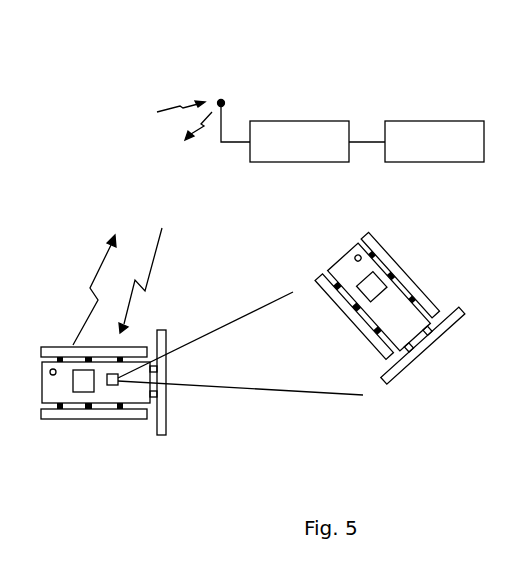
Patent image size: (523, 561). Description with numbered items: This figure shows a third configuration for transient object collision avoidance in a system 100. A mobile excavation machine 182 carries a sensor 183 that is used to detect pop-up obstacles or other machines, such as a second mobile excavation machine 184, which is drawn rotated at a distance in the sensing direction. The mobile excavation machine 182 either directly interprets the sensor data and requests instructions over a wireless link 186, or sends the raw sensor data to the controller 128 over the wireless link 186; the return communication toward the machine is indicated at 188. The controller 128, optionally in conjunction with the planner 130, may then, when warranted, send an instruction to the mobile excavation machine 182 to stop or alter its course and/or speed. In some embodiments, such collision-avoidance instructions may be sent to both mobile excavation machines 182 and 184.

The robotic system 100 is at (300, 32).
The controller 128 is at (297, 117).
The planner 130 is at (425, 117).
The mobile excavation machine 182 is at (75, 422).
The sensor 183 is at (113, 385).
The mobile excavation machine 184 is at (358, 247).
The wireless link 186 is at (103, 267).
The received signal 188 is at (152, 272).